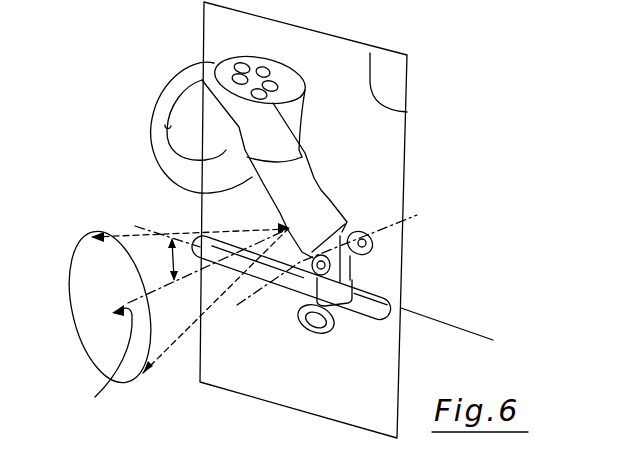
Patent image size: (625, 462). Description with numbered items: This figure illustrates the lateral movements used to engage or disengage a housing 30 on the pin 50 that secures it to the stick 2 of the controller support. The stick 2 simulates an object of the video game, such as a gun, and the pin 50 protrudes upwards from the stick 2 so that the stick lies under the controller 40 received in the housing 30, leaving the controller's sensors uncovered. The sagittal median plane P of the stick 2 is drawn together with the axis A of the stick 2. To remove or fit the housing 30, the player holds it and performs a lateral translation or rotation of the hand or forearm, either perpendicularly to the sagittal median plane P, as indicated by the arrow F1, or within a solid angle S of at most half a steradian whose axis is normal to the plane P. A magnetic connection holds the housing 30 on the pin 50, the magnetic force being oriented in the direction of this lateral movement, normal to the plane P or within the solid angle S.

The stick 2 is at (383, 287).
The housing 30 is at (303, 173).
The controller 40 is at (307, 113).
The pin 50 is at (365, 258).
The axis A is at (467, 332).
The solid angle S is at (154, 260).
The arrow F1 is at (98, 366).
The sagittal median plane P is at (388, 82).